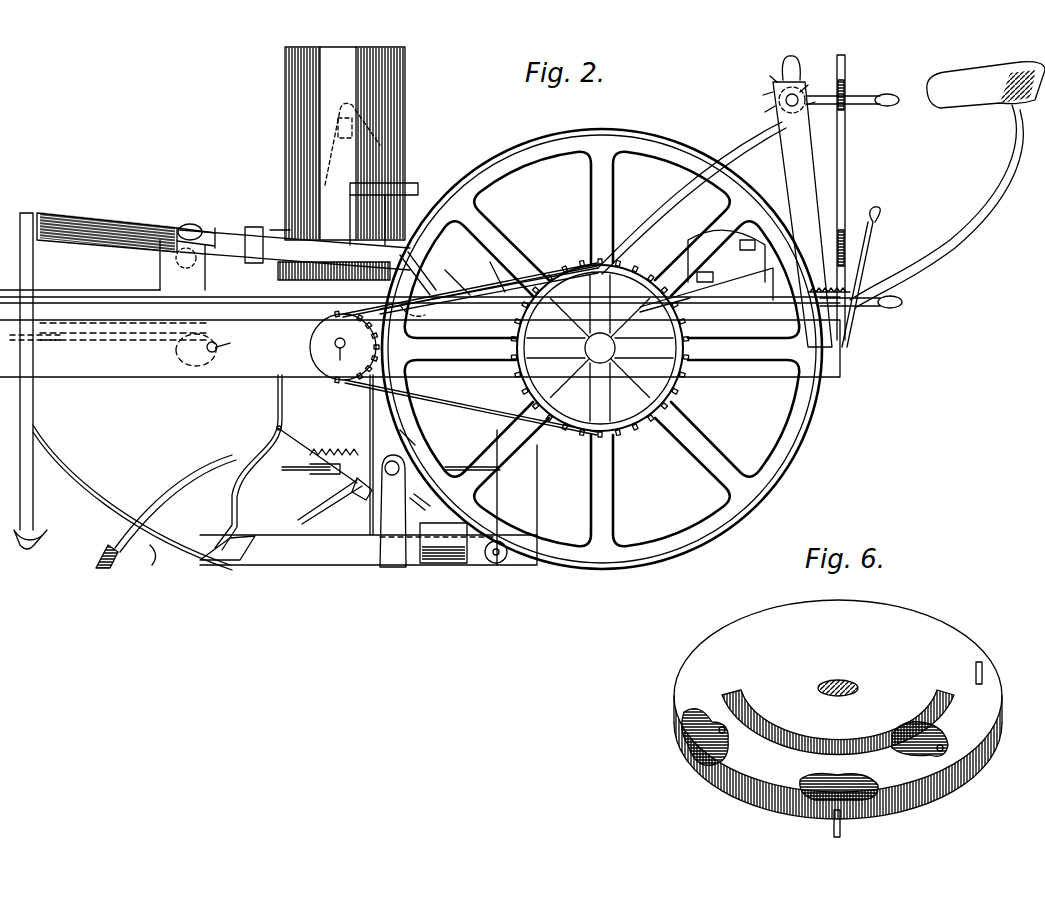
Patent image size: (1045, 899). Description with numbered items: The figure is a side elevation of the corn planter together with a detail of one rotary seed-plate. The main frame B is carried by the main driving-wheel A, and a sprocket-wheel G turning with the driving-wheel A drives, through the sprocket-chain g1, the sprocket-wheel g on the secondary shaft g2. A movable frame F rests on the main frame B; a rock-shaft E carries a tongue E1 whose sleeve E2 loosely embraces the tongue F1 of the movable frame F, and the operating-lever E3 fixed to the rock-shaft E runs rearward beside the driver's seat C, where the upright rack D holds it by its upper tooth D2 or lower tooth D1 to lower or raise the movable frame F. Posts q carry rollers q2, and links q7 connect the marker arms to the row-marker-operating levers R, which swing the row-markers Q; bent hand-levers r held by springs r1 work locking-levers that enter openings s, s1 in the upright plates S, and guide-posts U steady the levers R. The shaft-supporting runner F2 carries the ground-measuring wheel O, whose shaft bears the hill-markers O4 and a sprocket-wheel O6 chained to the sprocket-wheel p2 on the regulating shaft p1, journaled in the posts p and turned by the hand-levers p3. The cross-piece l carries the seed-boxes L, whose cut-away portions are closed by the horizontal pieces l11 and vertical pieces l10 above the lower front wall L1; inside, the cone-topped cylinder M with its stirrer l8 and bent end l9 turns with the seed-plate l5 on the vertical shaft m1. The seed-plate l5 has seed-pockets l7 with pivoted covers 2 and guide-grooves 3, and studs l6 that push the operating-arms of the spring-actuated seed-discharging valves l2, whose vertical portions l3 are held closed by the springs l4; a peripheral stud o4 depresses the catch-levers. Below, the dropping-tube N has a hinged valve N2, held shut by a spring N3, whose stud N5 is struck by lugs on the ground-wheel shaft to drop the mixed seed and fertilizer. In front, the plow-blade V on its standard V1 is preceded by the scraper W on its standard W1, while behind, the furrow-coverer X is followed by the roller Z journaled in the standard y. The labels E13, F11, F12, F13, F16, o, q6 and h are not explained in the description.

In FIG. 2, the main driving-wheel A is at (603, 349).
In FIG. 2, the main frame B is at (420, 348).
In FIG. 2, the driver's seat C is at (947, 175).
In FIG. 2, the upright rack D is at (846, 168).
In FIG. 2, the downwardly-bent tooth D1 is at (846, 240).
In FIG. 2, the upwardly-bent tooth D2 is at (850, 92).
In FIG. 2, the rock-shaft E is at (233, 343).
In FIG. 2, the projecting tongue E1 is at (178, 349).
In FIG. 2, the sleeve E2 is at (125, 338).
In FIG. 2, the operating-lever E3 is at (668, 227).
In FIG. 2, the arm end E13 is at (907, 71).
In FIG. 2, the movable frame F is at (760, 314).
In FIG. 2, the tongue F1 is at (112, 286).
In FIG. 2, the frame bar F11 is at (43, 328).
In FIG. 2, the shaft-supporting runner F2 is at (132, 497).
In FIG. 2, the lower bar F12 is at (368, 470).
In FIG. 2, the post F13 is at (517, 497).
In FIG. 2, the bracket F16 is at (164, 564).
In FIG. 2, the sprocket-wheel G is at (648, 412).
In FIG. 2, the sprocket-wheel g is at (344, 347).
In FIG. 2, the sprocket-chain g1 is at (420, 393).
In FIG. 2, the secondary shaft g2 is at (350, 348).
In FIG. 2, the seed-box L is at (345, 134).
In FIG. 2, the lower front wall of seed-box L1 is at (285, 226).
In FIG. 2, the supporting frame or cross-piece l is at (354, 291).
In FIG. 2, the seed-discharging valve l2 is at (424, 314).
In FIG. 2, the vertical portion of valve l3 is at (457, 264).
In FIG. 2, the spring l4 is at (497, 261).
In FIG. 2, the rotary seed counting and conveying plate l5 is at (420, 258).
In FIG. 6, the rotary seed counting and conveying plate l5 is at (915, 625).
In FIG. 2, the stud l6 is at (416, 256).
In FIG. 6, the stud l6 is at (984, 678).
In FIG. 6, the seed pocket l7 is at (838, 716).
In FIG. 2, the seed stirrer l8 is at (352, 134).
In FIG. 2, the downwardly-bent end of stirrer l9 is at (342, 137).
In FIG. 2, the vertical piece l10 is at (352, 222).
In FIG. 2, the horizontal piece l11 is at (410, 184).
In FIG. 2, the cylinder M is at (334, 175).
In FIG. 6, the vertical shaft m1 is at (838, 675).
In FIG. 2, the fertilizer and seed dropping and mixing tube N is at (317, 403).
In FIG. 2, the hinged valve N2 is at (309, 454).
In FIG. 2, the spring N3 is at (334, 434).
In FIG. 2, the stud N5 is at (330, 502).
In FIG. 2, the ground-measuring wheel O is at (322, 498).
In FIG. 2, the hill-marker O4 is at (393, 511).
In FIG. 2, the sprocket-wheel O6 is at (422, 488).
In FIG. 2, the rod o is at (472, 457).
In FIG. 6, the stud o4 is at (857, 823).
In FIG. 2, the upright post p is at (802, 214).
In FIG. 2, the ground-wheel-regulating shaft p1 is at (808, 98).
In FIG. 2, the sprocket-wheel p2 is at (759, 94).
In FIG. 2, the hand-lever p3 is at (800, 70).
In FIG. 2, the row-marker Q is at (20, 485).
In FIG. 2, the upwardly-extending post q is at (186, 272).
In FIG. 2, the short spindle or roller q2 is at (182, 265).
In FIG. 2, the hopper q6 is at (107, 239).
In FIG. 2, the link q7 is at (188, 226).
In FIG. 2, the row-marker-operating lever R is at (512, 268).
In FIG. 2, the bent hand-lever r is at (870, 300).
In FIG. 2, the spring r1 is at (829, 280).
In FIG. 2, the upright plate S is at (716, 232).
In FIG. 2, the opening s is at (740, 248).
In FIG. 2, the opening s1 is at (705, 267).
In FIG. 2, the guide-post U is at (252, 226).
In FIG. 2, the opening plow-blade V is at (230, 556).
In FIG. 2, the standard V1 is at (248, 462).
In FIG. 2, the curved scraper W is at (100, 555).
In FIG. 2, the standard W1 is at (175, 503).
In FIG. 2, the furrow-coverer X is at (443, 543).
In FIG. 2, the standard y is at (409, 437).
In FIG. 2, the roller Z is at (498, 562).
In FIG. 6, the pivoted cover 2 is at (815, 739).
In FIG. 6, the ascending guide-groove 3 is at (860, 752).
In FIG. 2, the handle h is at (902, 305).